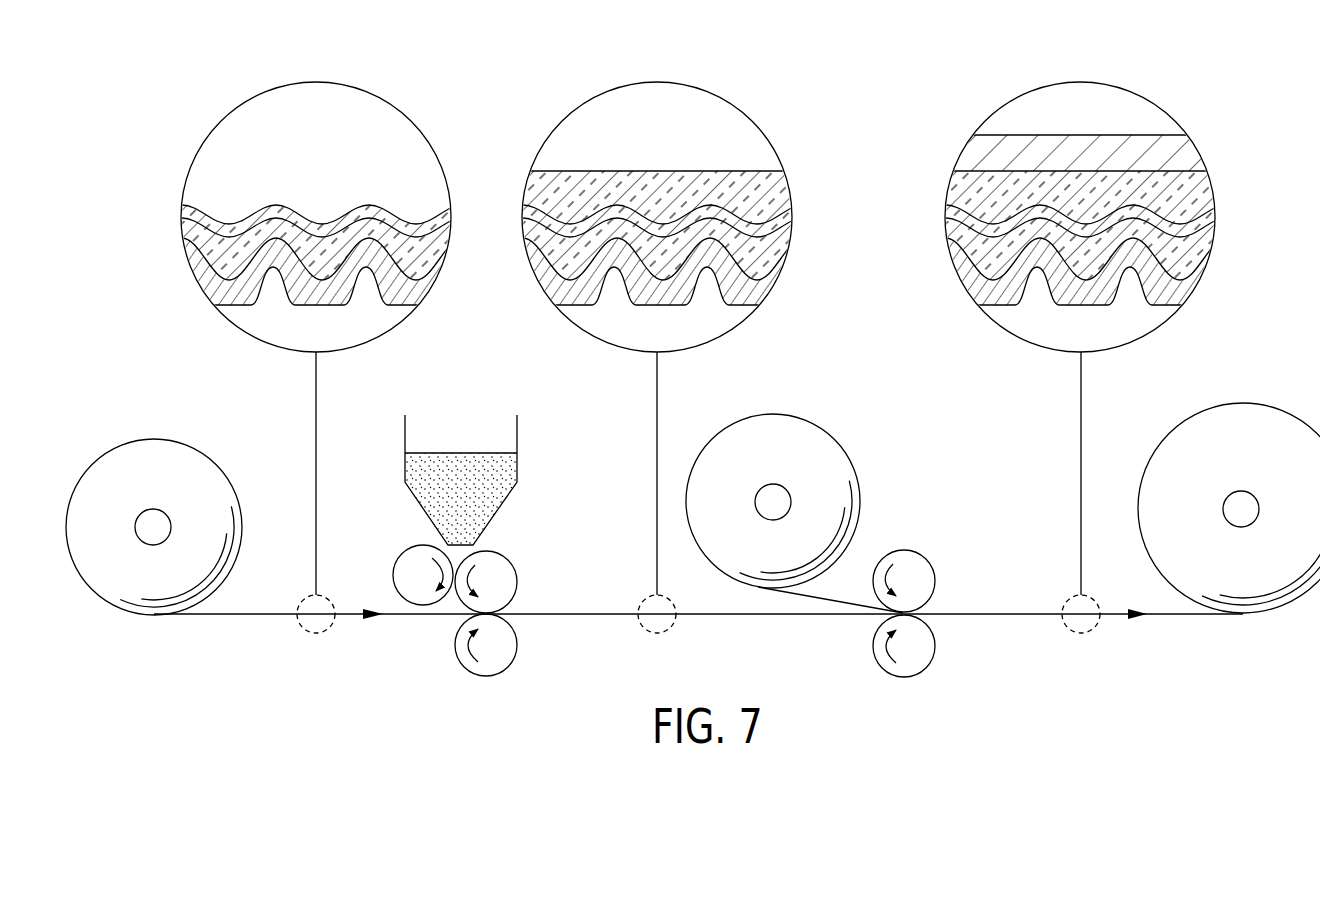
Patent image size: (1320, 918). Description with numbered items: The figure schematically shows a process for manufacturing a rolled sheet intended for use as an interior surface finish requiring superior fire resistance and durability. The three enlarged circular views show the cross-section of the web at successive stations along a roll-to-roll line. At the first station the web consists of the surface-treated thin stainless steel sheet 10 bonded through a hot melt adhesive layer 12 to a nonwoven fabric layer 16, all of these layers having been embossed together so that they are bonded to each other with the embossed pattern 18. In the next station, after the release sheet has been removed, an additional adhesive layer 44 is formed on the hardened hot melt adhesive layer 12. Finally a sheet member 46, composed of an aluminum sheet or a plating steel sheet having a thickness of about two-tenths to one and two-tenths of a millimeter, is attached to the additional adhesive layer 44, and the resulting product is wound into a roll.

The thin stainless steel sheet 10 is at (217, 290).
The hot melt adhesive layer 12 is at (222, 220).
The nonwoven fabric layer 16 is at (209, 243).
The embossed pattern 18 is at (298, 302).
The additional adhesive layer 44 is at (702, 170).
The sheet member 46 is at (1080, 135).